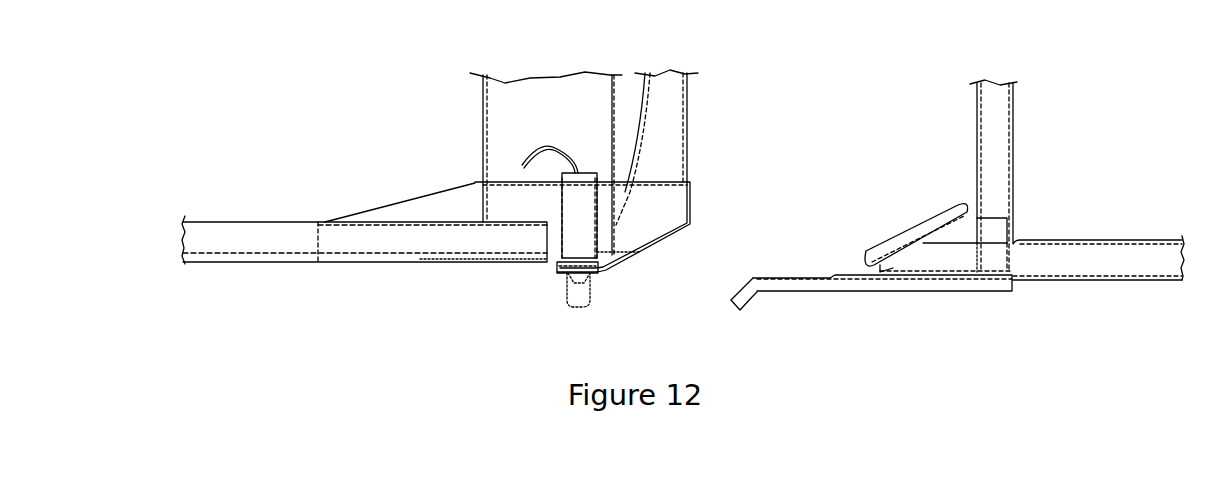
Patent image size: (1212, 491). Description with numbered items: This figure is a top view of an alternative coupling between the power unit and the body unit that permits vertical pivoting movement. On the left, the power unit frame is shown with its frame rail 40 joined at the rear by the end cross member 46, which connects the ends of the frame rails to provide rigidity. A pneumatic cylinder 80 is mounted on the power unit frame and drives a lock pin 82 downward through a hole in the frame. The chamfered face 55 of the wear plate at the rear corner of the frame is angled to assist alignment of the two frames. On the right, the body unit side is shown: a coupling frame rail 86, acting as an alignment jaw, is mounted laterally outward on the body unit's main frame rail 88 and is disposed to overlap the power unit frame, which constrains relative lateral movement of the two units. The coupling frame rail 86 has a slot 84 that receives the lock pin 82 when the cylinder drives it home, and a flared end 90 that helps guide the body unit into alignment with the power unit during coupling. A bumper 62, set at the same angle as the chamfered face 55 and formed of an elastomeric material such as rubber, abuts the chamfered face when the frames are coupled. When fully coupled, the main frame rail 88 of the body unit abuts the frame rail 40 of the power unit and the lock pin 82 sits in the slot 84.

The frame rail 40 is at (307, 263).
The end cross member 46 is at (687, 130).
The chamfered face 55 is at (640, 252).
The pneumatic cylinder 80 is at (562, 203).
The lock pin 82 is at (567, 280).
The bumper 62 is at (927, 217).
The slot 84 is at (795, 297).
The coupling frame rail 86 is at (873, 293).
The main frame rail 88 is at (1108, 240).
The flared end 90 is at (733, 292).